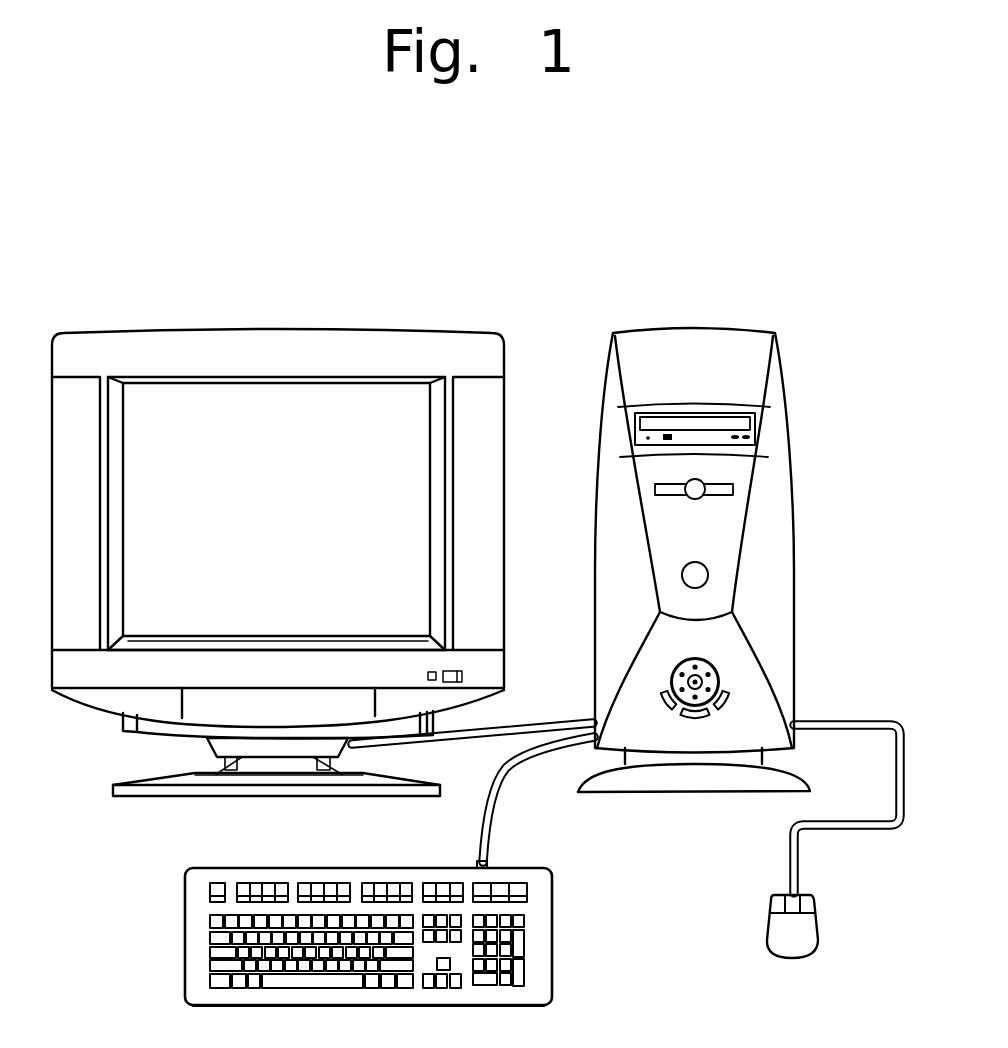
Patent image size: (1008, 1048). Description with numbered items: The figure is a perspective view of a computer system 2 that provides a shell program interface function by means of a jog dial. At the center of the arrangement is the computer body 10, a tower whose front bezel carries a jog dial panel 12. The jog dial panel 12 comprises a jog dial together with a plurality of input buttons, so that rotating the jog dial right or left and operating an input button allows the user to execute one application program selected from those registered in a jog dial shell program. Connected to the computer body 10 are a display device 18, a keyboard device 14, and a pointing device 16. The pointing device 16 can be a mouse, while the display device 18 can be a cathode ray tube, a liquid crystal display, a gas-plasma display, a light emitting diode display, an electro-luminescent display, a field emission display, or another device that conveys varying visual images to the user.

The computer system 2 is at (482, 215).
The computer body 10 is at (794, 445).
The jog dial panel 12 is at (742, 658).
The keyboard device 14 is at (553, 910).
The pointing device 16 is at (818, 942).
The display device 18 is at (336, 332).